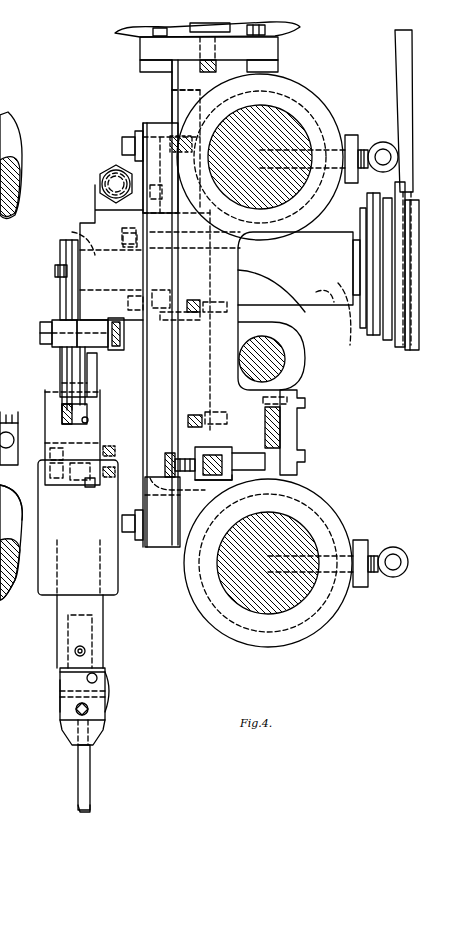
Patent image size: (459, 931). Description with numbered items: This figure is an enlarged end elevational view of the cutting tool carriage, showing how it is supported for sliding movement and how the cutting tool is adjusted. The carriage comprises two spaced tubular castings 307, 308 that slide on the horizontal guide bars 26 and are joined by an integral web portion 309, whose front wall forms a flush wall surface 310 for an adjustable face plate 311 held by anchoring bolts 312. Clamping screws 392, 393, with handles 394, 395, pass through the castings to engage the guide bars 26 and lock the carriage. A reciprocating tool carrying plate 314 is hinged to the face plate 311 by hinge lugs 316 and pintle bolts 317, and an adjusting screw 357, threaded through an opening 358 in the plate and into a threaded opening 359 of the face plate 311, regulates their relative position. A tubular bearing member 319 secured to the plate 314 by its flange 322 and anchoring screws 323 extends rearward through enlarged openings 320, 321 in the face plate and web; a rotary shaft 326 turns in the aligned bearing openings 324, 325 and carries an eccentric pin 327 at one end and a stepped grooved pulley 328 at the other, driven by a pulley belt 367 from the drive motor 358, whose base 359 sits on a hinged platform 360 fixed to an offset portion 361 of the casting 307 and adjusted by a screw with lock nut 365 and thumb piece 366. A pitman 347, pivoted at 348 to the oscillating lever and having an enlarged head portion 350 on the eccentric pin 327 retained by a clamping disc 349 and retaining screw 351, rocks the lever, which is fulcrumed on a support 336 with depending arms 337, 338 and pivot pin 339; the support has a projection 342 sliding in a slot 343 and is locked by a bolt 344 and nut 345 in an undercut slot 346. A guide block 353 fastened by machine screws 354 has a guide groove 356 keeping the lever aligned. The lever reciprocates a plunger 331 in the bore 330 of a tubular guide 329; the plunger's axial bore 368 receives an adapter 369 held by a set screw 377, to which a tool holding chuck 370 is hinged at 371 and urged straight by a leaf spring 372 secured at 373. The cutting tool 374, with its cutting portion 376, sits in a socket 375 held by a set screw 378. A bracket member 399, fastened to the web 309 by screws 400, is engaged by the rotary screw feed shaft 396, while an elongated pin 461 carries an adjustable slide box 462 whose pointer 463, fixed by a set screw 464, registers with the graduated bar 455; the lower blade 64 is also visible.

The horizontal guide bars 26 is at (292, 130).
The lower blade 64 is at (11, 505).
The tubular casting 307 is at (310, 100).
The tubular casting 308 is at (330, 512).
The web portion 309 is at (303, 311).
The flush wall surface 310 is at (176, 362).
The face plate 311 is at (152, 123).
The anchoring bolts 312 is at (122, 143).
The tool carrying plate 314 is at (95, 228).
The hinge lugs 316 is at (103, 185).
The pintle bolts 317 is at (100, 176).
The tubular bearing member 319 is at (329, 305).
The enlarged opening 320 is at (160, 157).
The enlarged opening 321 is at (200, 165).
The flange 322 is at (176, 250).
The anchoring screws 323 is at (178, 285).
The bearing opening 324 is at (95, 245).
The bearing opening 325 is at (352, 232).
The rotary shaft 326 is at (350, 345).
The eccentric pin 327 is at (60, 252).
The stepped grooved pulley 328 is at (390, 222).
The tubular guide 329 is at (78, 527).
The bore 330 is at (104, 578).
The reciprocating plunger 331 is at (62, 622).
The support 336 is at (58, 322).
The depending arm 337 is at (60, 370).
The depending arm 338 is at (92, 370).
The pivot pin 339 is at (60, 383).
The projection 342 is at (105, 360).
The slot 343 is at (97, 320).
The bolt 344 is at (40, 330).
The nut 345 is at (148, 360).
The undercut slot 346 is at (116, 318).
The pitman 347 is at (67, 360).
The pivot 348 is at (62, 422).
The clamping disc 349 is at (60, 260).
The enlarged head portion 350 is at (62, 245).
The retaining screw 351 is at (55, 272).
The guide block 353 is at (45, 408).
The machine screws 354 is at (55, 512).
The guide groove 356 is at (88, 420).
The adjusting screw 357 is at (88, 488).
The drive motor 358 is at (116, 33).
The base 359 is at (190, 493).
The hinged platform 360 is at (140, 55).
The offset portion 361 is at (178, 83).
The lock nut 365 is at (198, 42).
The thumb piece 366 is at (250, 33).
The pulley belt 367 is at (409, 82).
The axial bore 368 is at (68, 641).
The adapter 369 is at (62, 665).
The tool holding chuck 370 is at (60, 712).
The hinge point 371 is at (87, 678).
The leaf spring 372 is at (108, 694).
The spring attachment 373 is at (109, 677).
The cutting tool 374 is at (90, 768).
The socket 375 is at (70, 736).
The cutting portion 376 is at (78, 812).
The set screw 377 is at (86, 652).
The set screw 378 is at (88, 715).
The clamping screw 392 is at (364, 147).
The clamping screw 393 is at (373, 575).
The handle 394 is at (383, 146).
The handle 395 is at (393, 552).
The rotary screw feed shaft 396 is at (288, 366).
The bracket member 399 is at (299, 380).
The screws 400 is at (219, 315).
The graduated bar 455 is at (298, 431).
The elongated pin 461 is at (218, 477).
The adjustable slide box 462 is at (223, 467).
The pointer 463 is at (266, 428).
The set screw 464 is at (168, 455).